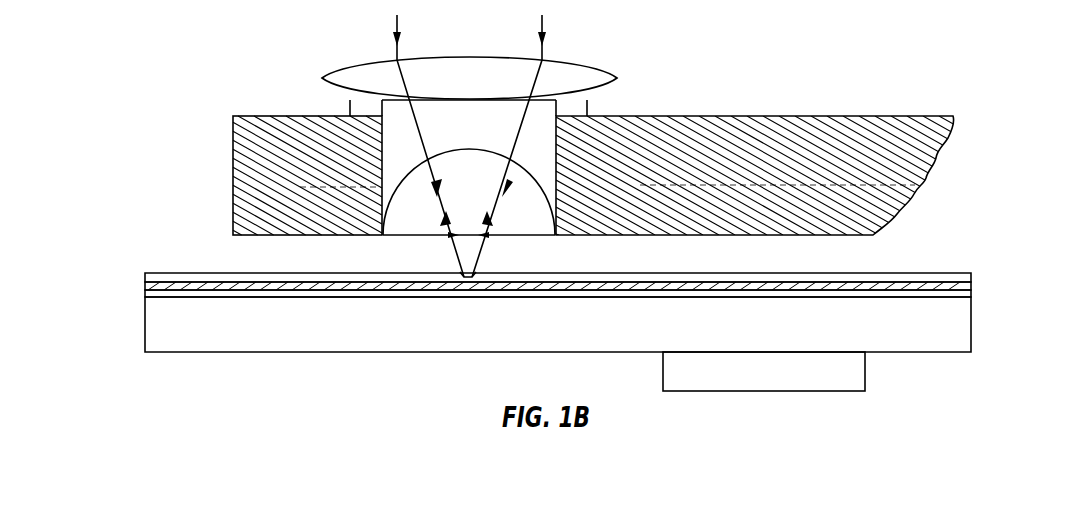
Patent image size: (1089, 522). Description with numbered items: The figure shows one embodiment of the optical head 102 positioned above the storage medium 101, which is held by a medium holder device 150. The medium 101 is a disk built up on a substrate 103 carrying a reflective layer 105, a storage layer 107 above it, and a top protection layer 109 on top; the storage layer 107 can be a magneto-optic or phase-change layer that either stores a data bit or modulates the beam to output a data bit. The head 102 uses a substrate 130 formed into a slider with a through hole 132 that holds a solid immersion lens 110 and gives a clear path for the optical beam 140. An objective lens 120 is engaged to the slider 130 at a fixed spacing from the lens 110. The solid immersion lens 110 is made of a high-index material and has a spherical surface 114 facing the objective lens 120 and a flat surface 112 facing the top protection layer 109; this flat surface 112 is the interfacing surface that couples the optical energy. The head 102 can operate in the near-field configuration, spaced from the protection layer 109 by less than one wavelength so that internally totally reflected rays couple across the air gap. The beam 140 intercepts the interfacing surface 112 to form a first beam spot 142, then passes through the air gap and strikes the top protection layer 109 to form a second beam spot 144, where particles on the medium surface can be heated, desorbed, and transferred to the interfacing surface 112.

The storage medium 101 is at (128, 325).
The optical head 102 is at (202, 60).
The substrate 103 is at (598, 342).
The reflective layer 105 is at (972, 296).
The storage layer 107 is at (972, 285).
The top protection layer 109 is at (925, 273).
The solid immersion lens 110 is at (538, 226).
The flat surface 112 is at (425, 236).
The spherical surface 114 is at (445, 150).
The objective lens 120 is at (575, 60).
The substrate (slider) 130 is at (900, 116).
The through hole 132 is at (487, 110).
The optical beam 140 is at (393, 23).
The first beam spot 142 is at (470, 235).
The second beam spot 144 is at (469, 277).
The medium holder device 150 is at (783, 382).